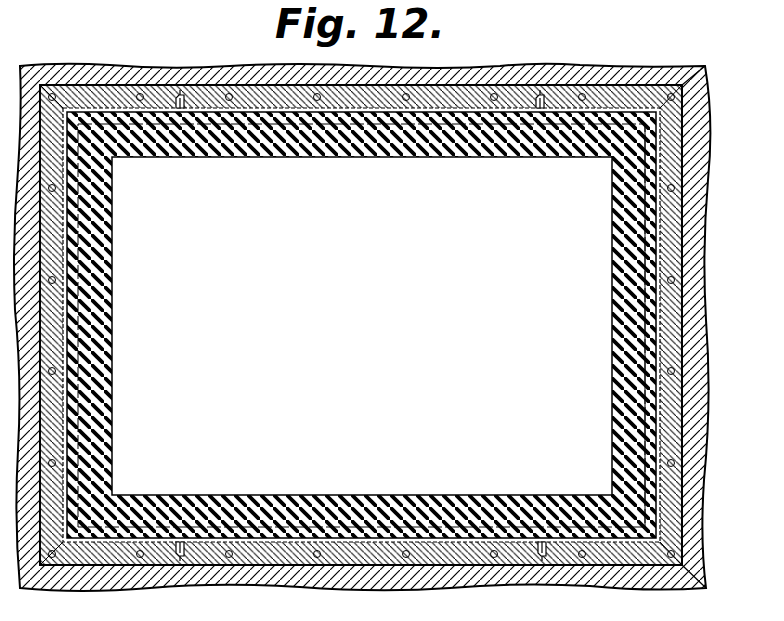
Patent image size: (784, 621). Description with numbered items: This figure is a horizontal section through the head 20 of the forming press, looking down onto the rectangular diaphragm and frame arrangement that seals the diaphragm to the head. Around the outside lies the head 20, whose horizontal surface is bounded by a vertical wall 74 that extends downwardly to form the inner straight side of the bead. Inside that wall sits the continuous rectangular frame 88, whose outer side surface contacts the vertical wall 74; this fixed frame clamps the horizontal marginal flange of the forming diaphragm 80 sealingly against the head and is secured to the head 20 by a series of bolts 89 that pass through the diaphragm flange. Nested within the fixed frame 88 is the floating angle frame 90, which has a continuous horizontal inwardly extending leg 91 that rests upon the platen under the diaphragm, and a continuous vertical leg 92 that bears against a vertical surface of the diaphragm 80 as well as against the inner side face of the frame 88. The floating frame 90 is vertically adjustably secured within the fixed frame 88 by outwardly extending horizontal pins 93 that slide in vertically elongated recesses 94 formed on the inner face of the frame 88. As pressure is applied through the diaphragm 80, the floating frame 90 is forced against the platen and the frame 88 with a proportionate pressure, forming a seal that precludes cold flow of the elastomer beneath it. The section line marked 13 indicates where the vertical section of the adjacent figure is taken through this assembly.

The head 20 is at (567, 60).
The vertical wall 74 is at (683, 240).
The forming diaphragm 80 is at (600, 397).
The continuous rectangular frame 88 is at (667, 313).
The bolts 89 is at (674, 188).
The floating angle frame 90 is at (670, 431).
The horizontal inwardly extending leg 91 is at (643, 470).
The vertical leg 92 is at (662, 485).
The horizontal pins 93 is at (185, 104).
The vertically elongated recesses 94 is at (183, 96).
The section line 13- 13 is at (180, 467).